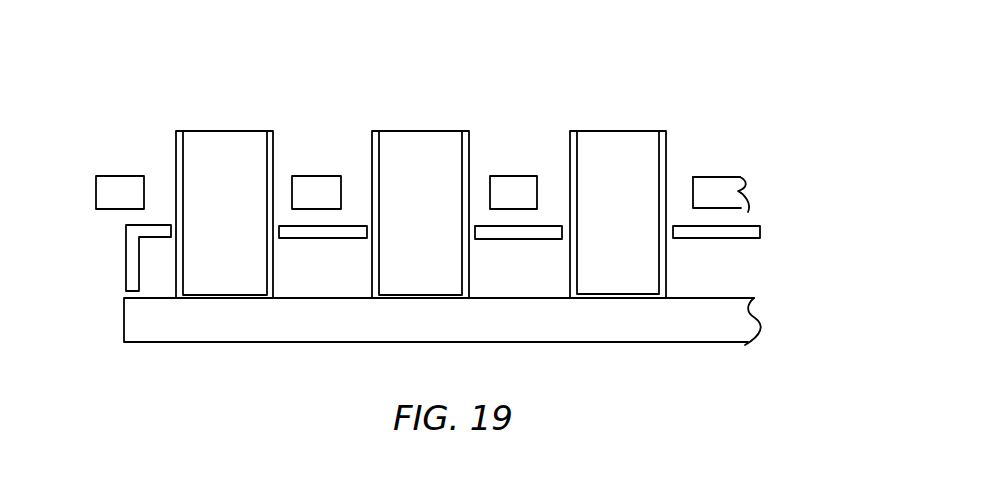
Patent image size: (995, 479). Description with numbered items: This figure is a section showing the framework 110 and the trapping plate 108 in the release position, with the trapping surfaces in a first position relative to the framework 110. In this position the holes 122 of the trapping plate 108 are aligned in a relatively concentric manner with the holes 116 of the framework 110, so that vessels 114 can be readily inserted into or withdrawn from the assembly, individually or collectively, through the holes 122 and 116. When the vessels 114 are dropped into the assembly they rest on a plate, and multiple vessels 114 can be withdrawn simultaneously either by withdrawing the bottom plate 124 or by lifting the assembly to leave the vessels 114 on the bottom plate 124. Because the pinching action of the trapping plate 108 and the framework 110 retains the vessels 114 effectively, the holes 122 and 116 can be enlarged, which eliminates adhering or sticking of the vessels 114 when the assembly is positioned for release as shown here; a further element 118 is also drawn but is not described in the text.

The trapping plate 108 is at (736, 191).
The framework 110 is at (112, 257).
The vessel 114 is at (667, 147).
The holes of framework 116 is at (562, 231).
The bar element 118 is at (747, 239).
The holes of trapping plate 122 is at (689, 183).
The bottom plate 124 is at (752, 320).